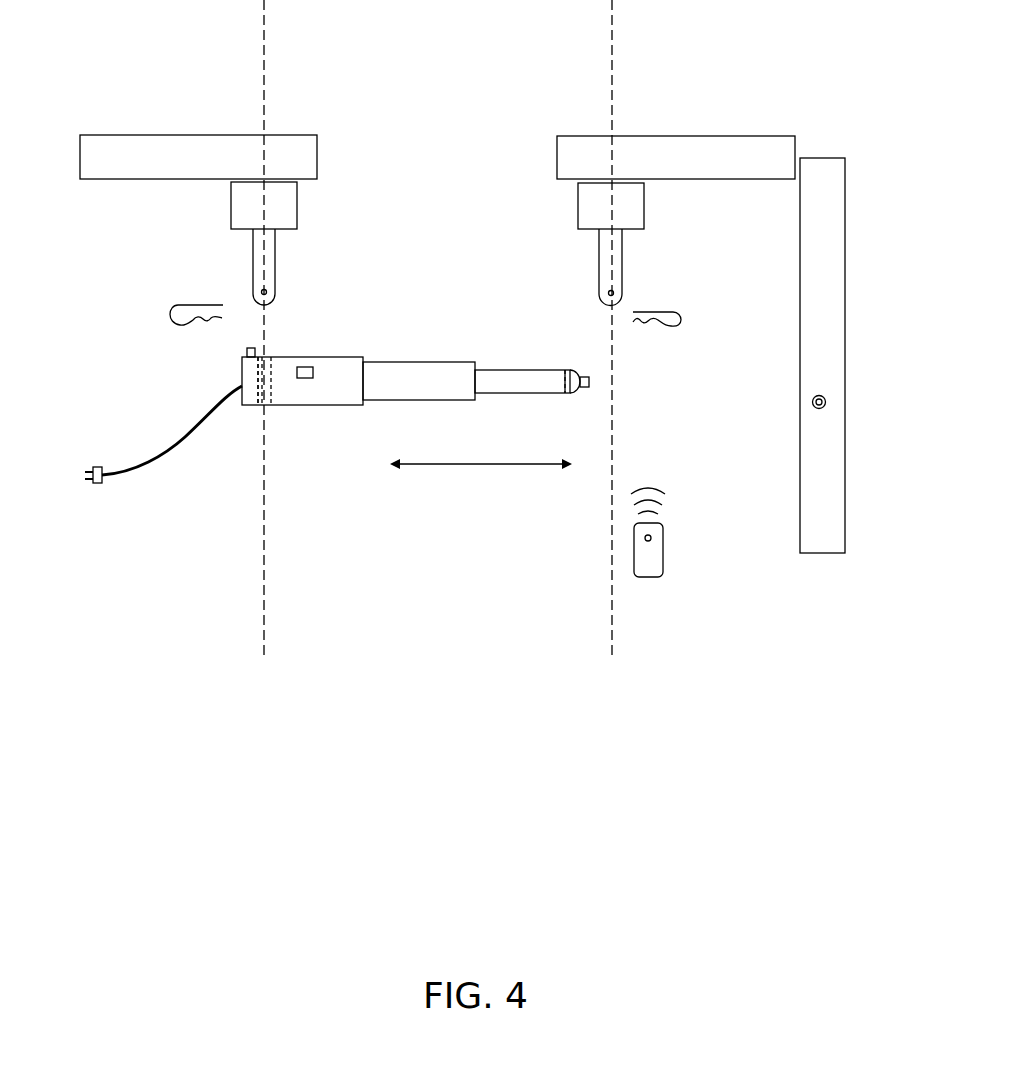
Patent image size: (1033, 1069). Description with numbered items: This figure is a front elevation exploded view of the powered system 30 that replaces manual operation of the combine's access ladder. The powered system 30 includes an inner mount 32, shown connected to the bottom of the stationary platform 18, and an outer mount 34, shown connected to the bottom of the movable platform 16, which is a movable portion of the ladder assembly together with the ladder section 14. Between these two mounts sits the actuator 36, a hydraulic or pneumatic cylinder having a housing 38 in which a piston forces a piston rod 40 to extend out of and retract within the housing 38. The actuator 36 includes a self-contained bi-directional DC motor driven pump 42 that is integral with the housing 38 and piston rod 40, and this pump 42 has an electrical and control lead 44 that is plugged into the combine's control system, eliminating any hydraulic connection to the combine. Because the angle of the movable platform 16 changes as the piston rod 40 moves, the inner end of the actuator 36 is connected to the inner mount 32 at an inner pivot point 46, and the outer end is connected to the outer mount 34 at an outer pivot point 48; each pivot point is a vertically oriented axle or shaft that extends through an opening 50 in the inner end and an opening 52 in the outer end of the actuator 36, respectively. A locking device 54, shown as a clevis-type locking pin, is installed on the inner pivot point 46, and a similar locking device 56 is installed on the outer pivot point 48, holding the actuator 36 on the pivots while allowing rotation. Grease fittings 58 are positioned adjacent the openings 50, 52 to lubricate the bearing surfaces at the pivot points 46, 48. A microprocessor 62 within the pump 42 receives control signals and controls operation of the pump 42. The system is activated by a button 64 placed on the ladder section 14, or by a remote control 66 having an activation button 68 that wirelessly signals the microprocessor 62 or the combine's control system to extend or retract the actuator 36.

The ladder section 14 is at (824, 313).
The movable platform 16 is at (664, 163).
The stationary platform 18 is at (193, 153).
The powered system 30 is at (400, 58).
The inner mount 32 is at (288, 202).
The outer mount 34 is at (583, 210).
The actuator 36 is at (308, 437).
The housing 38 is at (428, 362).
The piston rod 40 is at (527, 380).
The self-contained bi-directional DC motor driven pump 42 is at (328, 392).
The electrical and control lead 44 is at (167, 458).
The inner pivot point 46 is at (277, 263).
The outer pivot point 48 is at (598, 270).
The opening 50 is at (260, 405).
The opening 52 is at (568, 397).
The locking device 54 is at (178, 305).
The locking device 56 is at (673, 320).
The grease fittings 58 is at (247, 352).
The microprocessor 62 is at (302, 367).
The button 64 is at (825, 402).
The remote control 66 is at (663, 523).
The activation button 68 is at (652, 538).